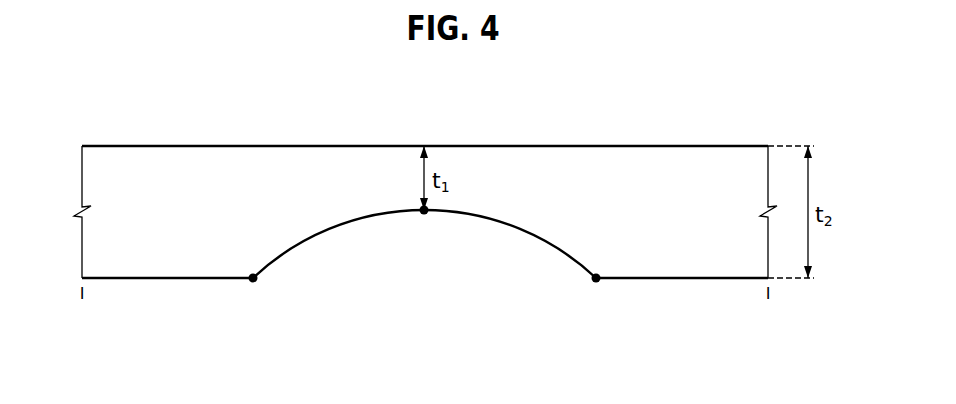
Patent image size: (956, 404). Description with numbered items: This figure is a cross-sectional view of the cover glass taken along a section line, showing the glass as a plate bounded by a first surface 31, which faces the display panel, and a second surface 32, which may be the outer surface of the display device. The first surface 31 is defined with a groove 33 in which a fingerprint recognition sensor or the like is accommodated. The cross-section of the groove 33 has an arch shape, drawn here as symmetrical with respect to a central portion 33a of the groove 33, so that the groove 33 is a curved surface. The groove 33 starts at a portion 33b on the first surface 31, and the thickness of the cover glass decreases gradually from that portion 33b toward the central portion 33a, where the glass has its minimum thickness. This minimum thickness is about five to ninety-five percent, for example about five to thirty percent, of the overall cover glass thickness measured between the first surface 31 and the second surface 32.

The first surface 31 is at (167, 290).
The second surface 32 is at (679, 143).
The groove 33 is at (522, 252).
The central portion 33a is at (424, 214).
The portion from which the groove begins 33b is at (253, 282).